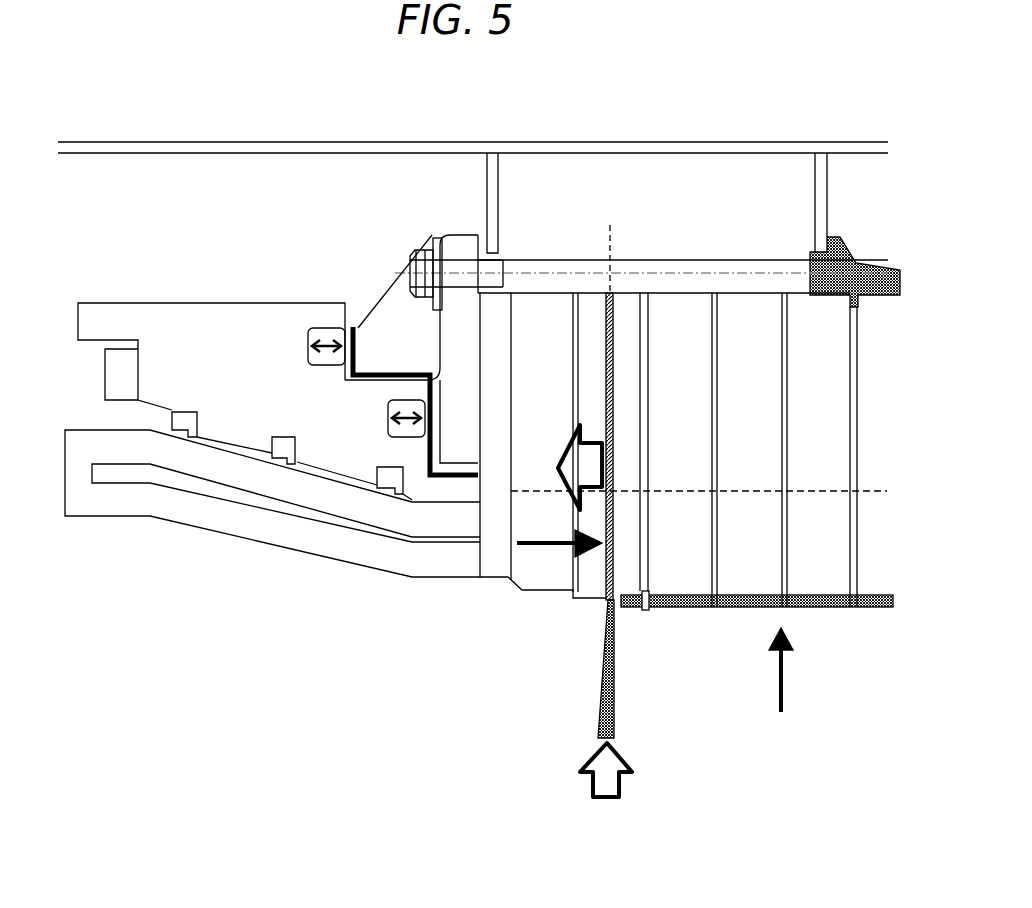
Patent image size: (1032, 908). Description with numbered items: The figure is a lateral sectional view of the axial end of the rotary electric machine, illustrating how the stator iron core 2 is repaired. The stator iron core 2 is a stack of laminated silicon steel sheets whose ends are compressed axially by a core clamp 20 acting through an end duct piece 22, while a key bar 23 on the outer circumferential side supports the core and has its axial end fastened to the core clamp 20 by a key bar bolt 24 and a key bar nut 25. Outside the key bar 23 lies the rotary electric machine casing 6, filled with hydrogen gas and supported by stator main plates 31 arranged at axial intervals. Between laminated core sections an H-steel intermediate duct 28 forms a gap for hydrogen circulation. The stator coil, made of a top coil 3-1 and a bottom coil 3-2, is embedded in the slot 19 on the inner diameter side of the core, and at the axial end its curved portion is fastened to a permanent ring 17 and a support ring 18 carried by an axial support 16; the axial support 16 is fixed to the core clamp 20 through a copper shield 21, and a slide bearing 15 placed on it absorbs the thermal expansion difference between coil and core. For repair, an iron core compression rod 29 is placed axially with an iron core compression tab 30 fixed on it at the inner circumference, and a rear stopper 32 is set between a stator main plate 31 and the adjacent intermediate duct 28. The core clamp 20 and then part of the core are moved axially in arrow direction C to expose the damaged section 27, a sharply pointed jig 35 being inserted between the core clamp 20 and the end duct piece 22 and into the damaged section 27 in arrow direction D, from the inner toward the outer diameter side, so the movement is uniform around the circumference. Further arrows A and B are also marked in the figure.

The stator iron core 2 is at (682, 300).
The top coil 3-1 is at (462, 563).
The bottom coil 3-2 is at (422, 522).
The rotary electric machine casing 6 is at (620, 150).
The slide bearing 15 is at (323, 330).
The axial support 16 is at (195, 325).
The permanent ring 17 is at (112, 386).
The support ring 18 is at (280, 448).
The slot 19 is at (733, 490).
The core clamp 20 is at (456, 412).
The copper shield 21 is at (428, 478).
The end duct piece 22 is at (495, 367).
The key bar 23 is at (560, 265).
The key bar bolt 24 is at (420, 255).
The key bar nut 25 is at (418, 250).
The damaged section 27 is at (610, 517).
The intermediate duct 28 is at (645, 450).
The iron core compression rod 29 is at (877, 593).
The iron core compression tab 30 is at (645, 610).
The stator main plate 31 is at (822, 173).
The rear stopper 32 is at (838, 247).
The jig 35 is at (610, 700).
The flow direction A is at (788, 676).
The flow direction B is at (553, 548).
The arrow direction C is at (573, 458).
The arrow direction D is at (607, 790).